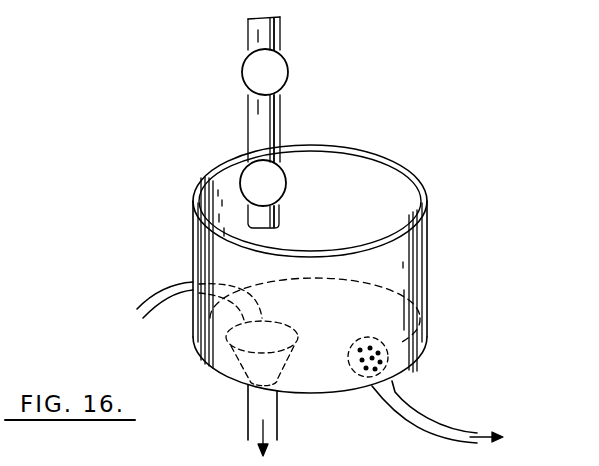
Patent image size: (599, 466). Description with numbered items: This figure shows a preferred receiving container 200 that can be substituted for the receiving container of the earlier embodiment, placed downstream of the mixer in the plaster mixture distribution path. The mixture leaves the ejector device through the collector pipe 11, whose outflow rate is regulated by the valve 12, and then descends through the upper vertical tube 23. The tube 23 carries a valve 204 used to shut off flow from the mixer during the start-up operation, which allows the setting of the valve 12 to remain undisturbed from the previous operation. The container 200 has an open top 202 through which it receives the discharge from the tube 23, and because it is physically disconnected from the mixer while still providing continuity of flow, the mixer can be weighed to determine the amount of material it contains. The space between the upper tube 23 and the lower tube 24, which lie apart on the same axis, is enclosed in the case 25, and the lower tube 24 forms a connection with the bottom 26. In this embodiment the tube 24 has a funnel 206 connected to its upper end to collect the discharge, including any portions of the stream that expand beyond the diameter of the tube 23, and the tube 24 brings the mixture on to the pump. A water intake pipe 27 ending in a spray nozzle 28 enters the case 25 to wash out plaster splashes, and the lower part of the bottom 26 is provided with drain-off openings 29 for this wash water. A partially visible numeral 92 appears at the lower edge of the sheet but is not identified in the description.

The receiving container 200 is at (145, 183).
The collector pipe 11 is at (283, 31).
The valve 12 is at (290, 73).
The tube 23 is at (258, 108).
The valve 204 is at (288, 184).
The open top 202 is at (403, 164).
The case 25 is at (400, 248).
The water intake pipe 27 is at (162, 290).
The spray nozzle 28 is at (262, 293).
The bottom 26 is at (415, 312).
The funnel 206 is at (285, 322).
The drain-off openings 29 is at (390, 360).
The tube 24 is at (280, 422).
The line 92 is at (197, 459).